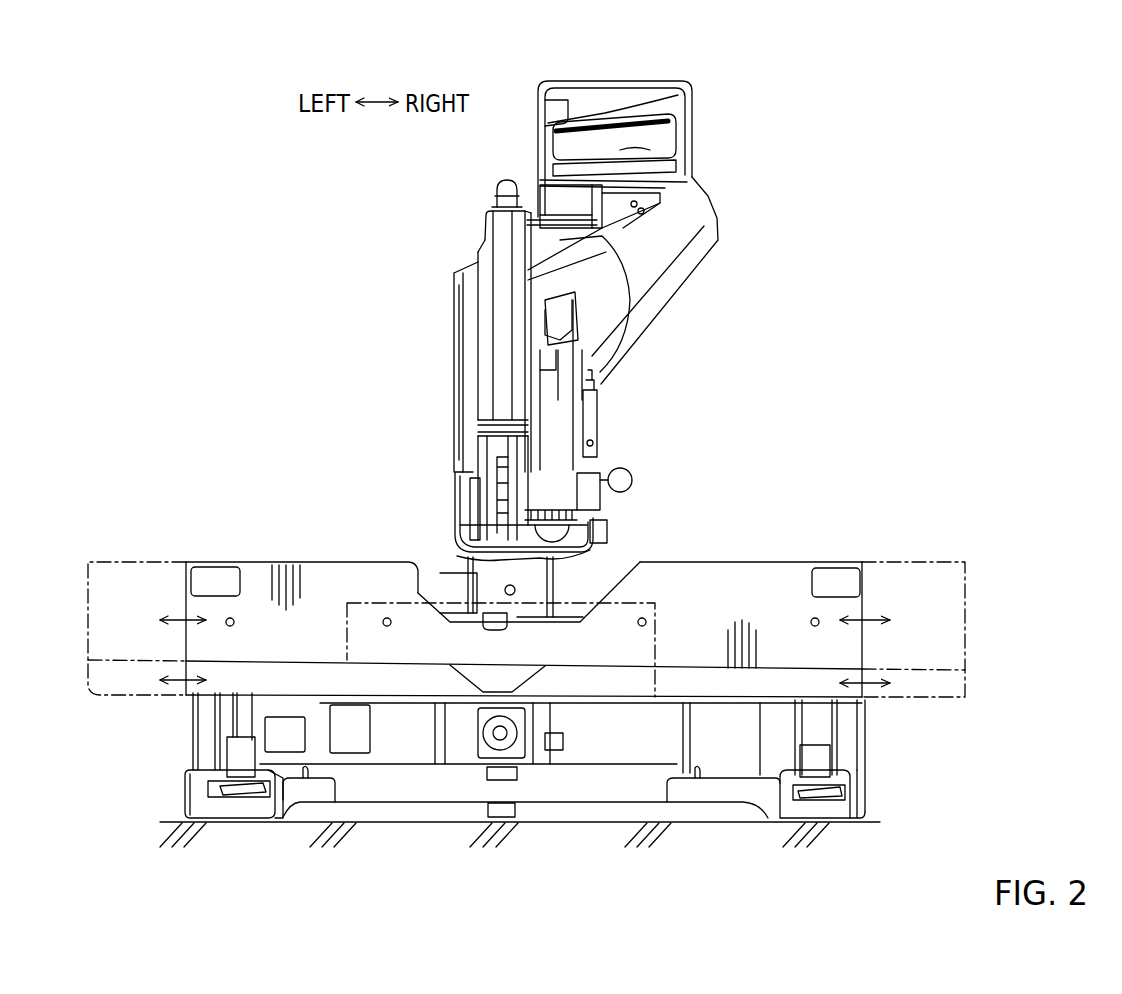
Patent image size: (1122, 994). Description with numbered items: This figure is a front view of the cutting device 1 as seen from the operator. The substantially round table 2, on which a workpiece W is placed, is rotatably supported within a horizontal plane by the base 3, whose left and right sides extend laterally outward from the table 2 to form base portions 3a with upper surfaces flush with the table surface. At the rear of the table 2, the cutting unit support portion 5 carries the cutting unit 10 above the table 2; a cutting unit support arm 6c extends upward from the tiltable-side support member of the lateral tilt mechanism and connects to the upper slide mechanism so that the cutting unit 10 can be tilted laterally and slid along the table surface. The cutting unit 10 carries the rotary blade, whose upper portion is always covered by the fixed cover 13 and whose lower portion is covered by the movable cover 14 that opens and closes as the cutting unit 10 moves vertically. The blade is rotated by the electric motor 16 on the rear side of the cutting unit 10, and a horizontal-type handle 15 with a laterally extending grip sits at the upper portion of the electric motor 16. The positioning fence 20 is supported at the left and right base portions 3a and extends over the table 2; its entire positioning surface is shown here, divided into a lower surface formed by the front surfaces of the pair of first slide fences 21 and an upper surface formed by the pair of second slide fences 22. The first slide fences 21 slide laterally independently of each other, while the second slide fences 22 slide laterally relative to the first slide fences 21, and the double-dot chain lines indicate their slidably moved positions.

The cutting device 1 is at (420, 268).
The table 2 is at (404, 742).
The base 3 is at (718, 812).
The base portions 3a is at (208, 747).
The cutting unit support portion 5 is at (487, 578).
The cutting unit support arm 6c is at (533, 573).
The cutting unit 10 is at (650, 337).
The fixed cover 13 is at (487, 253).
The movable cover 14 is at (487, 458).
The handle 15 is at (614, 95).
The electric motor 16 is at (670, 233).
The positioning fence 20 is at (699, 552).
The first slide fences 21 is at (290, 678).
The second slide fences 22 is at (316, 585).
The workpiece W is at (632, 605).